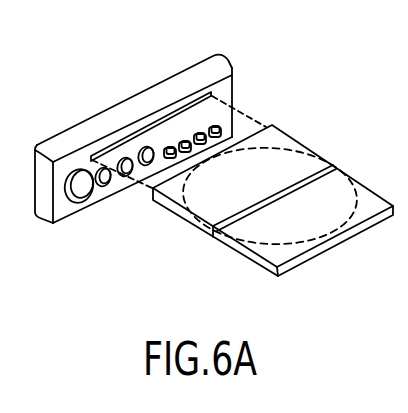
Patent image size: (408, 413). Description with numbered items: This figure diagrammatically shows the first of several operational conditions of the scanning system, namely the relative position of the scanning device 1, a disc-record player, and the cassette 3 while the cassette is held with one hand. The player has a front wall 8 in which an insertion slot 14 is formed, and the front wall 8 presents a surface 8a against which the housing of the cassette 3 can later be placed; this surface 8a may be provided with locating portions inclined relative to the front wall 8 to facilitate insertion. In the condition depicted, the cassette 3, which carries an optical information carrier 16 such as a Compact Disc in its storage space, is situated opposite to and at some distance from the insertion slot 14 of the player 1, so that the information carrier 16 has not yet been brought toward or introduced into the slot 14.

The scanning device 1 is at (232, 54).
The front wall 8 is at (224, 85).
The surface of the front wall 8a is at (115, 138).
The insertion slot 14 is at (175, 112).
The cassette 3 is at (315, 141).
The optical information carrier 16 is at (335, 192).